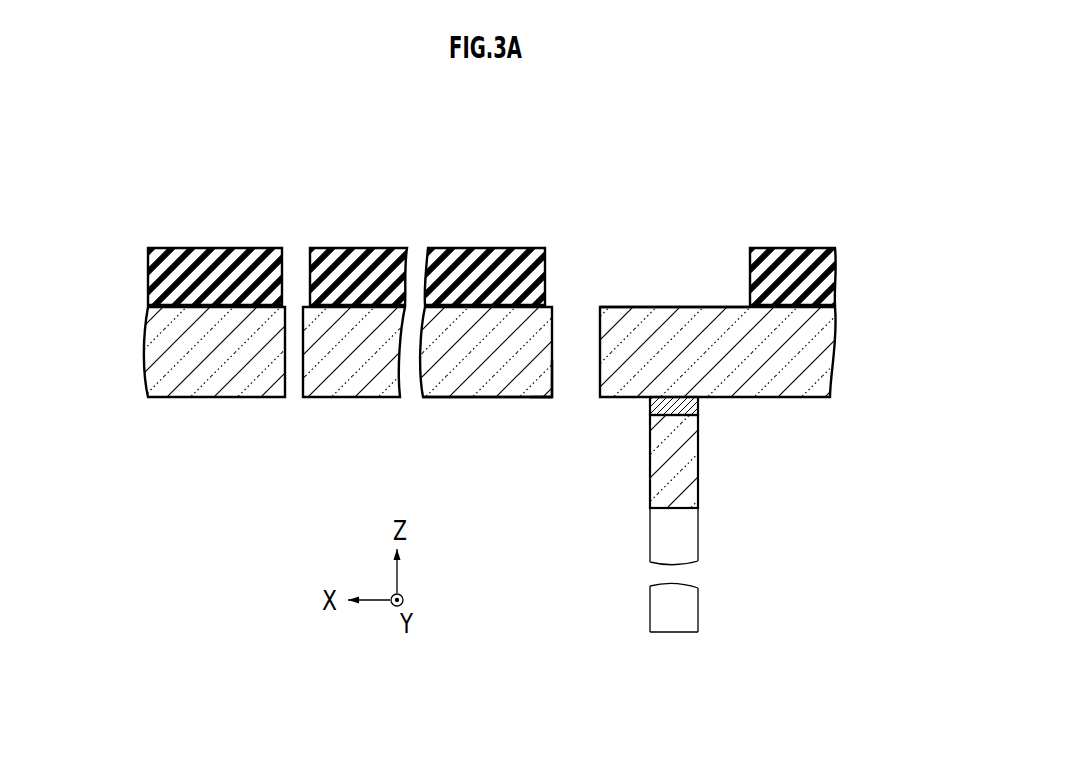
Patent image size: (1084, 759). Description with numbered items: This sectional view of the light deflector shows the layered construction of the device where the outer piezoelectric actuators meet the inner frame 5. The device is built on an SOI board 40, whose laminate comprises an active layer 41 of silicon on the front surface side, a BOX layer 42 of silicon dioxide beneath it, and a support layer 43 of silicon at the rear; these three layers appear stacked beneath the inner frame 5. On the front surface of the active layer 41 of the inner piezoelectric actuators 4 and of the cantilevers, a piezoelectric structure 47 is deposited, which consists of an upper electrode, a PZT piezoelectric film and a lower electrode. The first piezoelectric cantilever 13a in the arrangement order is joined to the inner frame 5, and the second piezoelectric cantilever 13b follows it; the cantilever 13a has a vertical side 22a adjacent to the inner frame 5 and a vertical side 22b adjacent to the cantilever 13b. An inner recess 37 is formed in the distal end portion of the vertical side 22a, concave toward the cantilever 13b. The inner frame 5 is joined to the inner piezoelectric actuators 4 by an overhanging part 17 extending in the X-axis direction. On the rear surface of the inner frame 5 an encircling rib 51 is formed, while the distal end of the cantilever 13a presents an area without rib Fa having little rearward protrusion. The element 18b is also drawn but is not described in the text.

The inner piezoelectric actuators 4 is at (795, 232).
The inner frame 5 is at (500, 402).
The piezoelectric cantilever 13a is at (356, 229).
The piezoelectric cantilever 13b is at (209, 229).
The overhanging part 17 is at (725, 306).
The electrode pad 18b is at (491, 229).
The vertical side 22a is at (514, 327).
The vertical side 22b is at (301, 398).
The inner recess 37 is at (555, 381).
The SOI board 40 is at (500, 352).
The active layer 41 is at (478, 332).
The BOX layer 42 is at (700, 405).
The support layer 43 is at (700, 467).
The piezoelectric structure 47 is at (500, 395).
The encircling rib 51 is at (649, 486).
The area without rib Fa is at (443, 398).